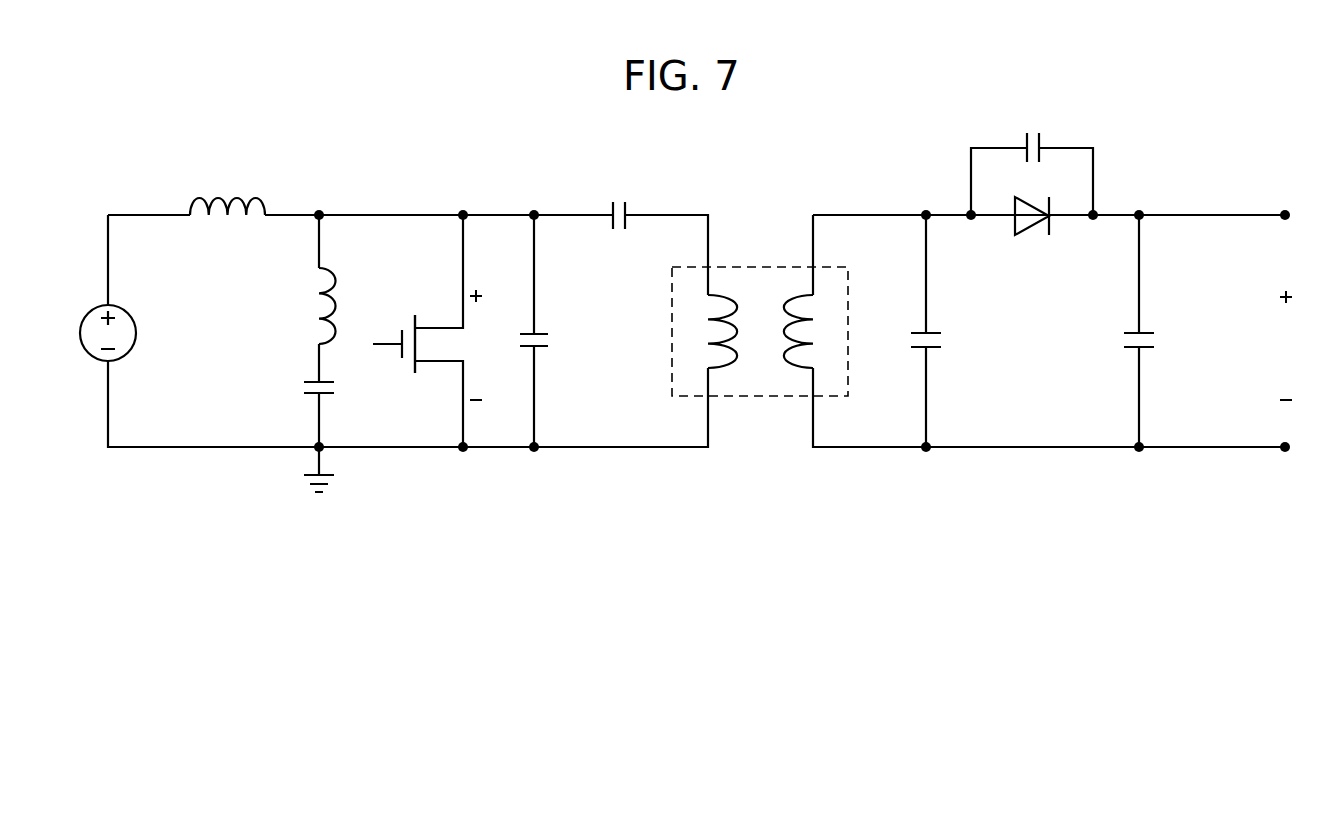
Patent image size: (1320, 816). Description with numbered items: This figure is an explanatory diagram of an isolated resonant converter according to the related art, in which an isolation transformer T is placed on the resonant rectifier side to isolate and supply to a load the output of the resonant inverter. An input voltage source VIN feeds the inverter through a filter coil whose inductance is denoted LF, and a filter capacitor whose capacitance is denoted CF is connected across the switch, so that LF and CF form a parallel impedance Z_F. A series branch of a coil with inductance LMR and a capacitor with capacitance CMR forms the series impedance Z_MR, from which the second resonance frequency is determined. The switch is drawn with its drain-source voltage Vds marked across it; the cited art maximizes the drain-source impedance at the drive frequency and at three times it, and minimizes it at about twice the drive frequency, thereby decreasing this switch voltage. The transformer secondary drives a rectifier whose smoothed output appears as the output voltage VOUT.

The input voltage source VIN is at (88, 333).
The inductance of the first coil LF is at (217, 197).
The inductance of the fourth coil LMR is at (337, 298).
The capacitance of the fourth capacitor CMR is at (304, 387).
The drain-source voltage of switch Vds is at (452, 343).
The capacitance of the first capacitor CF is at (548, 340).
The transformer T is at (750, 267).
The output voltage VOUT is at (1284, 331).